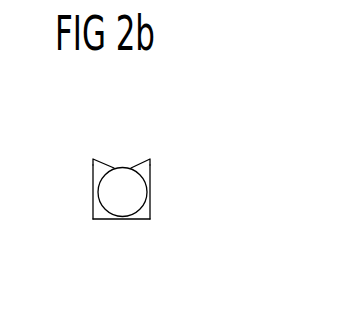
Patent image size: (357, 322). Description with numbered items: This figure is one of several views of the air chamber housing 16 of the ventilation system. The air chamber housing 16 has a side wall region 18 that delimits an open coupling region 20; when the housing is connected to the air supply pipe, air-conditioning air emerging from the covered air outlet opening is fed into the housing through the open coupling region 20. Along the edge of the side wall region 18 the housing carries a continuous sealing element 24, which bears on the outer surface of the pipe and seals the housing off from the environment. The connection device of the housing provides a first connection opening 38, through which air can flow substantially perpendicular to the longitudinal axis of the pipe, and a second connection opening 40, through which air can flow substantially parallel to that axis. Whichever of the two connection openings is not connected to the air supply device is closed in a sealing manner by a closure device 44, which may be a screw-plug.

The air chamber housing 16 is at (189, 114).
The side wall region 18 is at (151, 160).
The open coupling region 20 is at (114, 136).
The sealing element 24 is at (134, 166).
The first connection opening 38 is at (148, 220).
The second connection opening 40 is at (160, 192).
The closure device 44 is at (104, 196).